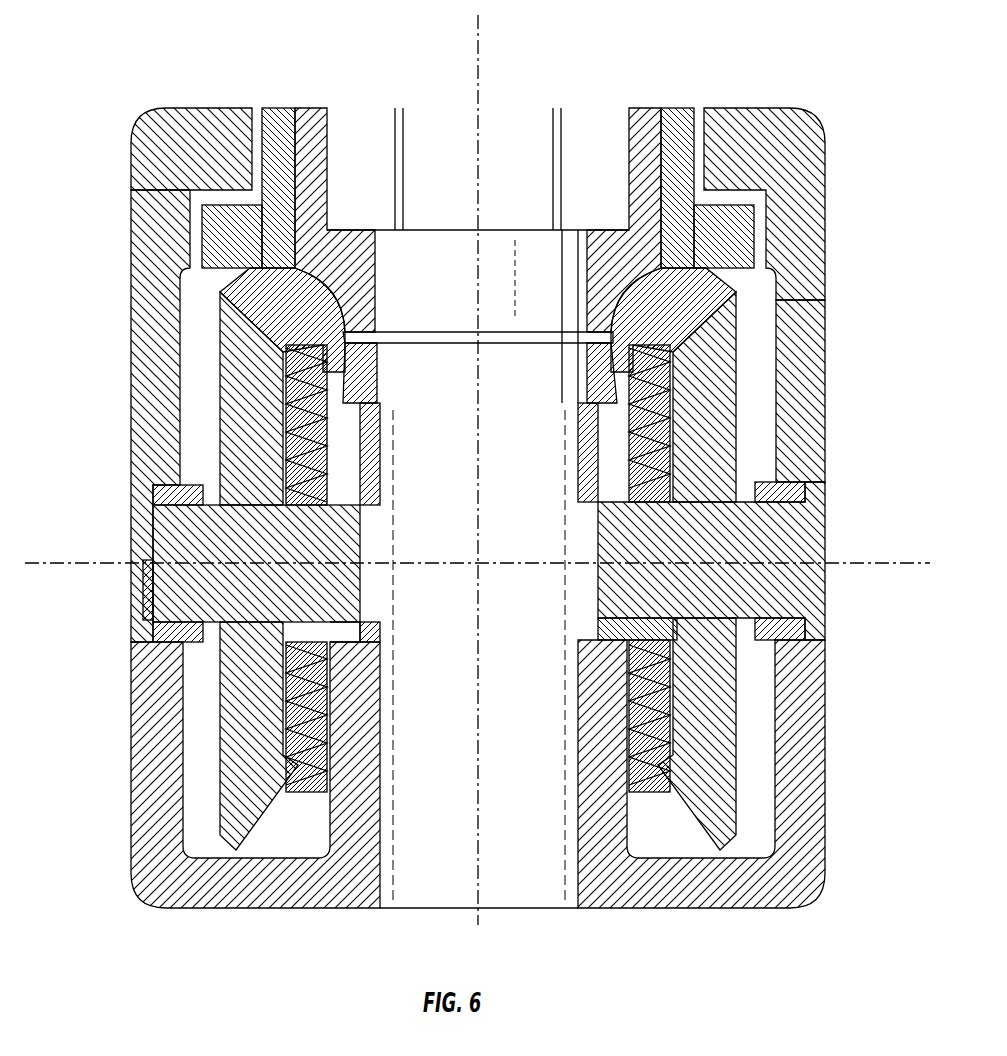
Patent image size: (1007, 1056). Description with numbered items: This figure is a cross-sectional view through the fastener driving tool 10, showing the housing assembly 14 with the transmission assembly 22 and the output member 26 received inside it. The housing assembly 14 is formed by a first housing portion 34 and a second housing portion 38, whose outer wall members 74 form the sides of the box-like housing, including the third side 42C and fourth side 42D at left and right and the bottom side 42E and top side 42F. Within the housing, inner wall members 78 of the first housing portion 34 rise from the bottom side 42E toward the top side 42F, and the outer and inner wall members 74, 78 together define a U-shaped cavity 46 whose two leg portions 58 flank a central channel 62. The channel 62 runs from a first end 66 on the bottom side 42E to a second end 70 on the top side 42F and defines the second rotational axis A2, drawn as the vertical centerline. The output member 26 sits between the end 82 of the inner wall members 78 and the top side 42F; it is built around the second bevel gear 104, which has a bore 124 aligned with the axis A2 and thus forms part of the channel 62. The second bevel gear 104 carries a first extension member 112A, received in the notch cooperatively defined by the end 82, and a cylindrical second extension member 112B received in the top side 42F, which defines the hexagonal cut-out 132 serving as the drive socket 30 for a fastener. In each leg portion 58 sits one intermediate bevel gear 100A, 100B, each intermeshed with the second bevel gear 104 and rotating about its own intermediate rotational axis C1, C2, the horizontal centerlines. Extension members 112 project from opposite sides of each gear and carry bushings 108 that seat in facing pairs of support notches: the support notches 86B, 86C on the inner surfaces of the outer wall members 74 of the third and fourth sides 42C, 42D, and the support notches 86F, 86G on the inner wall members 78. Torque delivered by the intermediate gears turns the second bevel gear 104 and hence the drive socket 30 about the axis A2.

The fastener driving tool 10 is at (106, 76).
The housing assembly 14 is at (875, 238).
The transmission assembly 22 is at (748, 386).
The output member 26 is at (288, 165).
The drive socket 30 is at (588, 140).
The first housing portion 34 is at (830, 846).
The second housing portion 38 is at (140, 150).
The third side 42C is at (150, 425).
The fourth side 42D is at (805, 392).
The bottom side 42E is at (220, 910).
The top side 42F is at (722, 108).
The cavity 46 is at (290, 822).
The leg portions 58 is at (300, 760).
The channel 62 is at (690, 790).
The first end 66 is at (393, 912).
The second end 70 is at (312, 108).
The outer wall members 74 is at (180, 298).
The inner wall members 78 is at (330, 782).
The end 82 is at (560, 385).
The support notch 86B is at (178, 636).
The support notch 86C is at (810, 535).
The support notch 86F is at (340, 648).
The support notch 86G is at (612, 642).
The bevel gear 100A is at (300, 332).
The bevel gear 100B is at (655, 410).
The second bevel gear 104 is at (270, 290).
The bushings 108 is at (225, 200).
The extension members 112 is at (335, 598).
The first extension member 112A is at (250, 212).
The second extension member 112B is at (262, 180).
The bore 124 is at (560, 270).
The cut-out 132 is at (633, 160).
The second rotational axis A2 is at (477, 85).
The intermediate rotational axis C1 is at (95, 560).
The intermediate rotational axis C2 is at (555, 560).